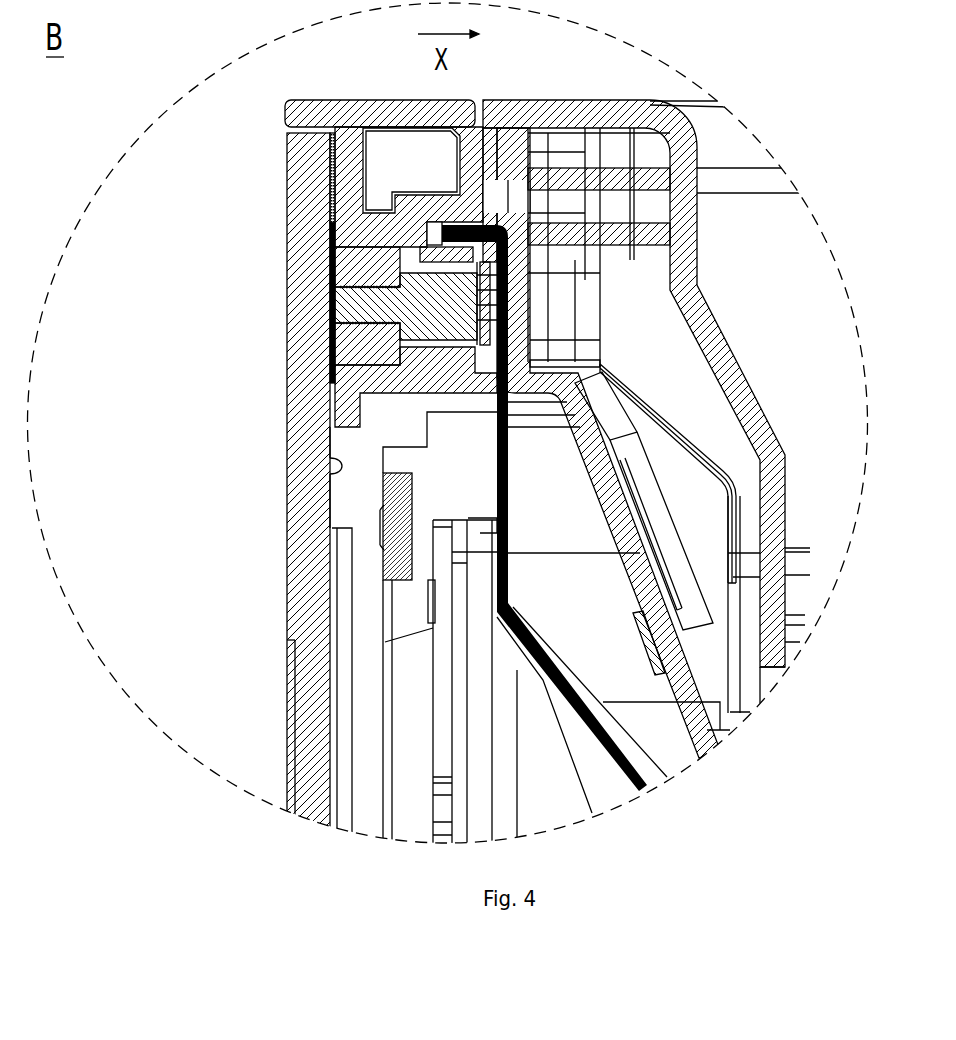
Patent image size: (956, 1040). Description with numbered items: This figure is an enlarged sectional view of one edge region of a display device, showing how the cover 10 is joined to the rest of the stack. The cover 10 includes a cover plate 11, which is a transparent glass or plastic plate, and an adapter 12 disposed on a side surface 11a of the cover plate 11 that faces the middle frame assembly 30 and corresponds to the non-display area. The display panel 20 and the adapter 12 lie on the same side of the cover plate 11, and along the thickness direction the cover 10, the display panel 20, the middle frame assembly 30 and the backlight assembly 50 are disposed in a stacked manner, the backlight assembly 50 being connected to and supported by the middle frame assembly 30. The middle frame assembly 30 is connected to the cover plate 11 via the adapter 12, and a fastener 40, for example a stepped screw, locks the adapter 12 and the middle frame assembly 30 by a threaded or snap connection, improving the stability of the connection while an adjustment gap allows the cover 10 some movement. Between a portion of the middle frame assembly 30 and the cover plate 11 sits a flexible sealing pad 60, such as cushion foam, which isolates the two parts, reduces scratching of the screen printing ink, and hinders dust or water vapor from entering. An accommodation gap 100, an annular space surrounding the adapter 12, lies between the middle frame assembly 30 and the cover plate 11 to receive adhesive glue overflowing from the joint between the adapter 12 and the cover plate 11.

The cover 10 is at (176, 255).
The cover plate 11 is at (310, 300).
The adapter 12 is at (347, 262).
The side surface 11a is at (343, 467).
The display panel 20 is at (345, 600).
The middle frame assembly 30 is at (408, 233).
The fastener 40 is at (450, 308).
The backlight assembly 50 is at (728, 392).
The flexible sealing pad 60 is at (342, 188).
The accommodation gap 100 is at (330, 365).